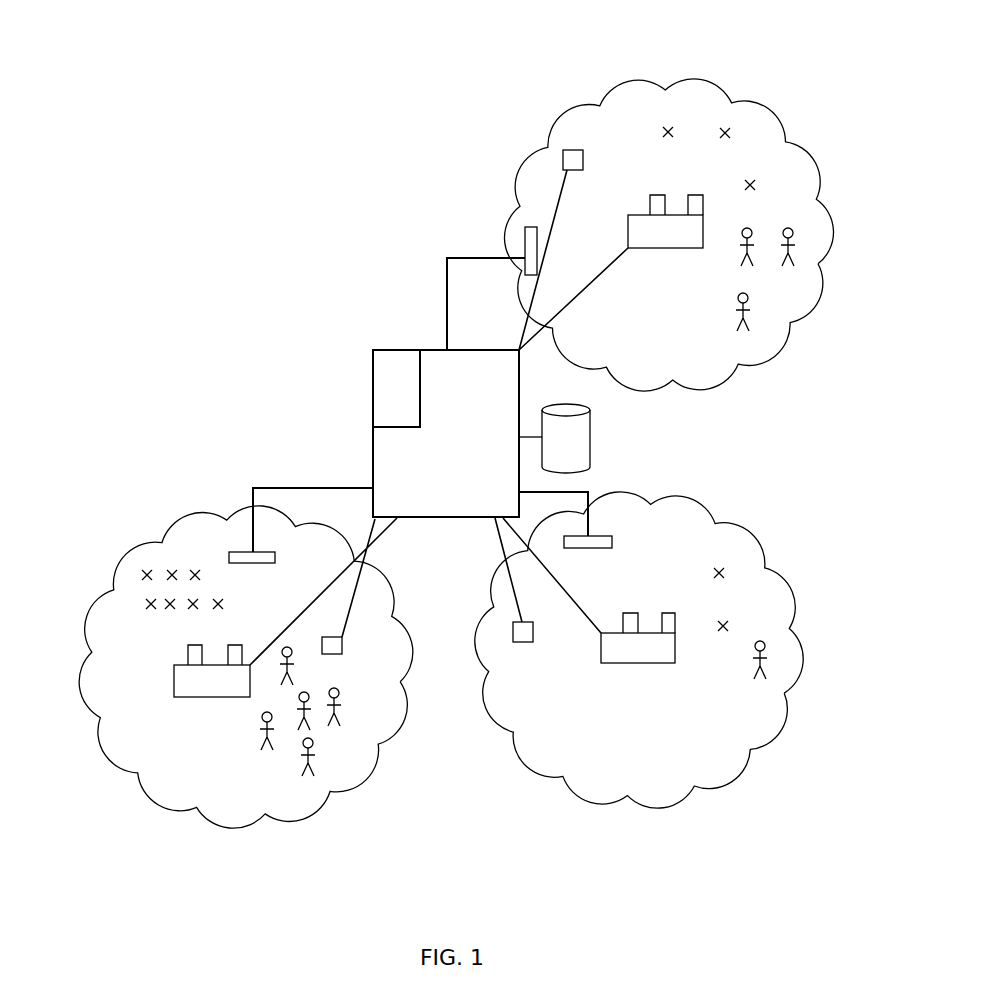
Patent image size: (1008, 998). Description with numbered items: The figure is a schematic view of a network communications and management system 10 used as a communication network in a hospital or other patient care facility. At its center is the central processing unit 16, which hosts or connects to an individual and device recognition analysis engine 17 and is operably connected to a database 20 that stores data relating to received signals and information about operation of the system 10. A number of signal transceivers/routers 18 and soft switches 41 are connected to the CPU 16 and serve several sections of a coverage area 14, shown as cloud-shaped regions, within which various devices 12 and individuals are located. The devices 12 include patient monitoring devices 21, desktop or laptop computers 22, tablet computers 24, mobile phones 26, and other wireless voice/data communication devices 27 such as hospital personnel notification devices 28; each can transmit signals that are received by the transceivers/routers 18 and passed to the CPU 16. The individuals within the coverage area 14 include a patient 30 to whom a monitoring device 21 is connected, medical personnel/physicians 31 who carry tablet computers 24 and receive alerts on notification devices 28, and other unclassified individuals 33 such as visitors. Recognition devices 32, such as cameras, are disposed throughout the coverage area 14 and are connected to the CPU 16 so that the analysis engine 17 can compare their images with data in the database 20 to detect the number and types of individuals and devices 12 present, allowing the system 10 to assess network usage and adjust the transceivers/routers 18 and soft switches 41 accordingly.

The network communications and management system 10 is at (342, 315).
The devices 12 is at (751, 162).
The coverage area 14 is at (771, 98).
The central processing unit 16 is at (472, 350).
The individual and device recognition analysis engine 17 is at (393, 427).
The signal transceivers/routers 18 is at (667, 250).
The database 20 is at (592, 437).
The patient monitoring devices 21 is at (726, 145).
The desktop or laptop computers 22 is at (146, 604).
The tablet computers 24 is at (661, 132).
The mobile phones 26 is at (772, 185).
The wireless voice/data communication devices 27 is at (722, 140).
The hospital personnel notification devices 28 is at (718, 136).
The patient 30 is at (806, 246).
The medical personnel/physician 31 is at (293, 670).
The recognition devices 32 is at (561, 152).
The individuals 33 is at (750, 322).
The soft switches 41 is at (525, 243).